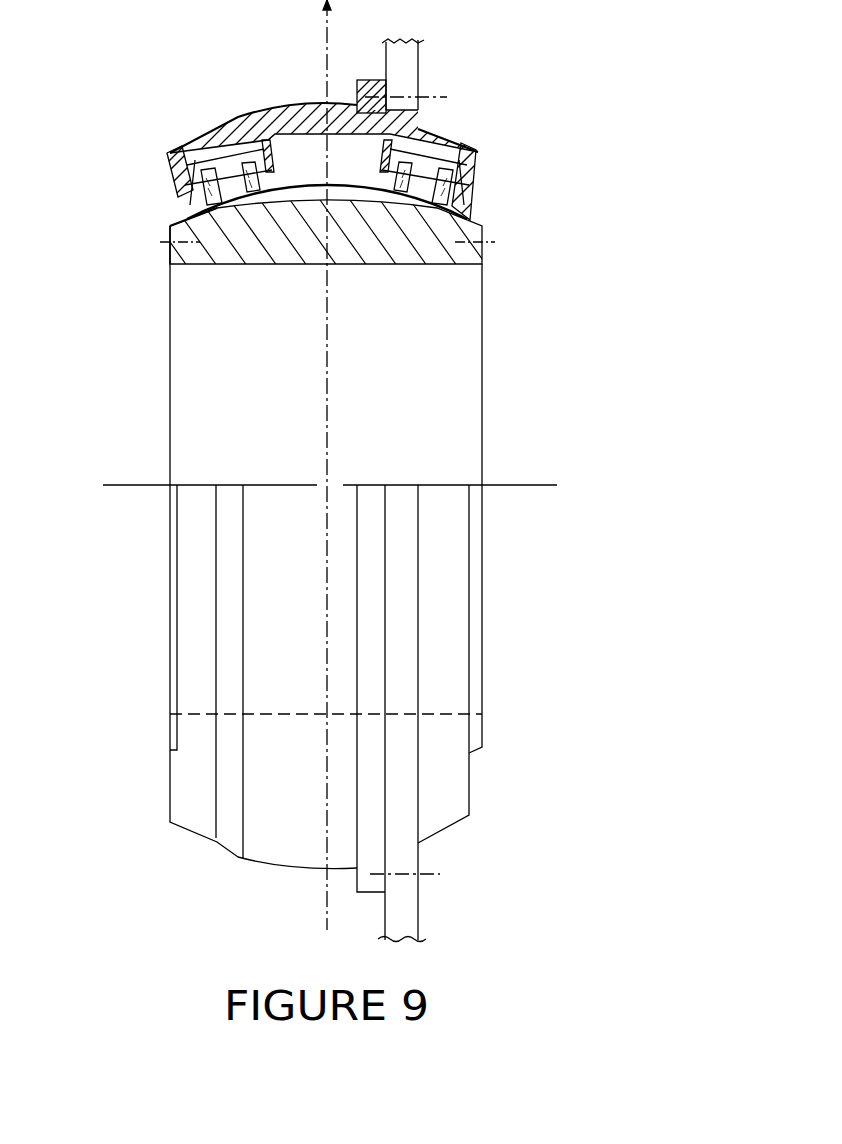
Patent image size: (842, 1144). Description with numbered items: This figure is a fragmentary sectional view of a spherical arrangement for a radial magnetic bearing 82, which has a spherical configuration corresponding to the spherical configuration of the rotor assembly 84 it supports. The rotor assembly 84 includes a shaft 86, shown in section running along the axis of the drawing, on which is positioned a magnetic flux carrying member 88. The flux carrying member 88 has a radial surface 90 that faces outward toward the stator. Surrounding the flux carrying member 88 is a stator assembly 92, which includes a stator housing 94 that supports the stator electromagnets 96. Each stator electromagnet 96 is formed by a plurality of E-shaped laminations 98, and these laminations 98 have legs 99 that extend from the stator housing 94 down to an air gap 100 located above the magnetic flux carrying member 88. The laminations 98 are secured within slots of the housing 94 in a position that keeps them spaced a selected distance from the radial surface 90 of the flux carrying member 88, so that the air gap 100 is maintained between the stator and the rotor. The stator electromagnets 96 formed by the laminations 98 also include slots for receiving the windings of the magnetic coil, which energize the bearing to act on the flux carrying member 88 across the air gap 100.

The radial magnetic bearing 82 is at (565, 180).
The rotor assembly 84 is at (486, 369).
The shaft 86 is at (486, 248).
The magnetic flux carrying member 88 is at (200, 217).
The radial surface 90 is at (170, 226).
The stator assembly 92 is at (416, 113).
The stator housing 94 is at (287, 100).
The stator electromagnets 96 is at (200, 150).
The E-shaped laminations 98 is at (170, 156).
The legs 99 is at (185, 191).
The air gap 100 is at (248, 235).